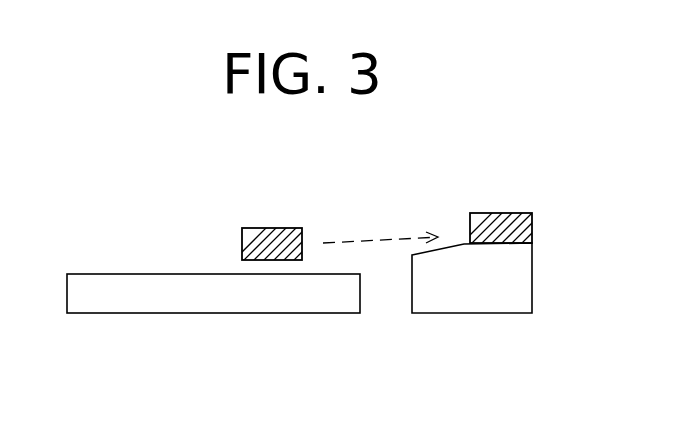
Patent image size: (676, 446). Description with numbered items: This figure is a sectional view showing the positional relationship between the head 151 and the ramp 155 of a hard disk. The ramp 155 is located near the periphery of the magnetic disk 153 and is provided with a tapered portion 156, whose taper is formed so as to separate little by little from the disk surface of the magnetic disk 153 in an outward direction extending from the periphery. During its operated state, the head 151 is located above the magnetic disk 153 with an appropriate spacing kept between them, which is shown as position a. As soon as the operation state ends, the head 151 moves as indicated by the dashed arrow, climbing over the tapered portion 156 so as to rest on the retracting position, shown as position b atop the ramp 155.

The head 151 is at (240, 232).
The magnetic disk 153 is at (203, 313).
The ramp 155 is at (492, 313).
The tapered portion 156 is at (458, 243).